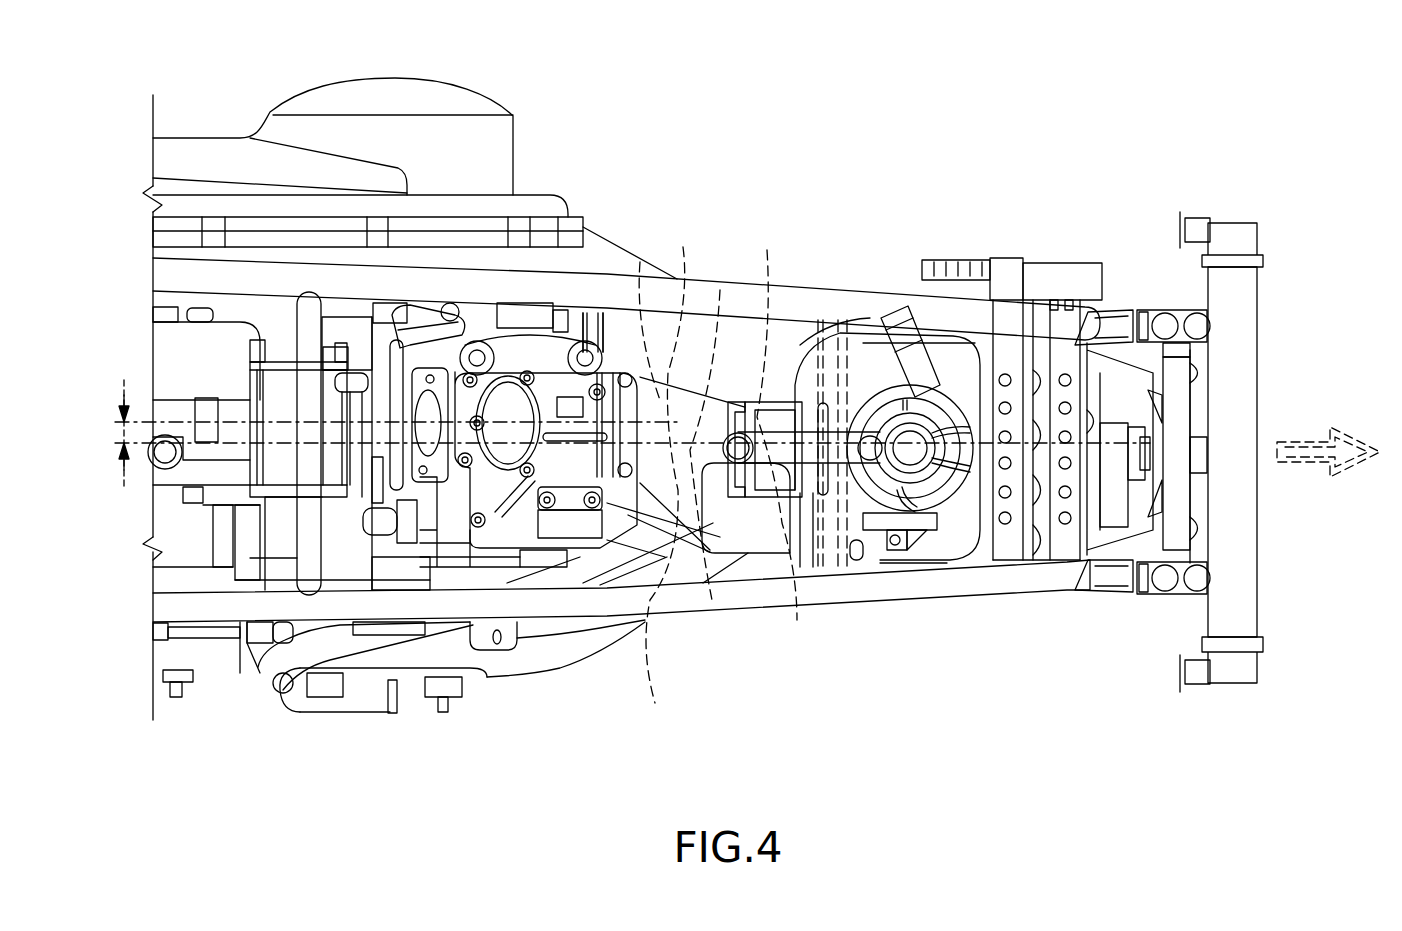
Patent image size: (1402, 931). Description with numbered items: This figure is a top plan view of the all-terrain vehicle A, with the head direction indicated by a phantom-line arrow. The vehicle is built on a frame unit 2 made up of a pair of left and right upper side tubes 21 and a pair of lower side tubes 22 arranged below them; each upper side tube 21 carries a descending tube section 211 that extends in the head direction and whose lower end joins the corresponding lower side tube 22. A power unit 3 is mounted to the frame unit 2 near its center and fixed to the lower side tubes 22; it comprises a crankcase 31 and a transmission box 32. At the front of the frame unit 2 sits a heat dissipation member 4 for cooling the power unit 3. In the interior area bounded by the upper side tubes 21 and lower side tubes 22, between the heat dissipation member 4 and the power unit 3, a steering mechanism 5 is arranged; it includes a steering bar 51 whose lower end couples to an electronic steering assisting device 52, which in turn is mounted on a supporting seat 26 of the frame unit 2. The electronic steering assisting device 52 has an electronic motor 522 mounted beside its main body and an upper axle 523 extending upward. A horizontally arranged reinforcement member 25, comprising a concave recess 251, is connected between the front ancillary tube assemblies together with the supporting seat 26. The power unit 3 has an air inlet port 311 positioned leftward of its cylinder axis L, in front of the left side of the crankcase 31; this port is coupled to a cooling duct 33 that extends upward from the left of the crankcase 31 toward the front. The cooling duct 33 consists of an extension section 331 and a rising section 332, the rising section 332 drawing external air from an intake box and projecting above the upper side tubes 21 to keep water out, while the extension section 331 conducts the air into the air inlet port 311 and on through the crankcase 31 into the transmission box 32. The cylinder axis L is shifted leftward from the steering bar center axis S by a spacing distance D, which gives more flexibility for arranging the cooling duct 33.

The transmission box 32 is at (456, 103).
The crankcase 31 is at (525, 315).
The air inlet port 311 is at (618, 340).
The extension section 331 is at (720, 365).
The steering mechanism 5 is at (762, 395).
The steering bar 51 is at (780, 497).
The electronic motor 522 is at (737, 520).
The electronic steering assisting device 52 is at (946, 495).
The upper axle 523 is at (925, 345).
The reinforcement member 25 is at (828, 330).
The recess 251 is at (885, 565).
The supporting seat 26 is at (922, 555).
The rising section 332 is at (870, 330).
The cooling duct 33 is at (899, 305).
The upper side tubes 21 is at (838, 592).
The descending tube section 211 is at (1140, 345).
The heat dissipation member 4 is at (1242, 545).
The power unit 3 is at (253, 700).
The lower side tubes 22 is at (555, 655).
The frame unit 2 is at (597, 673).
The cylinder axis L is at (665, 461).
The steering bar center axis S is at (718, 489).
The spacing distance D is at (108, 435).
The all-terrain vehicle A is at (1097, 157).